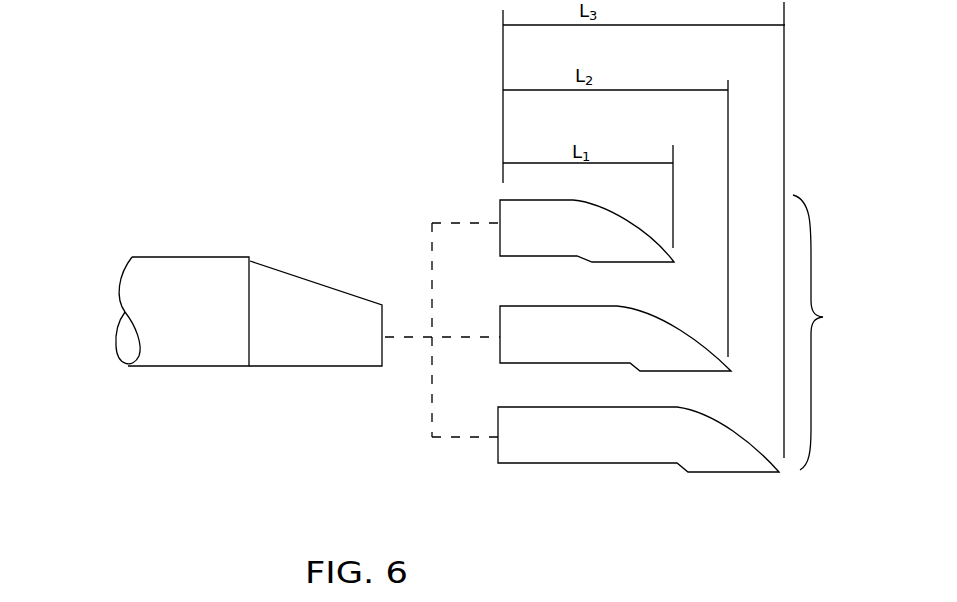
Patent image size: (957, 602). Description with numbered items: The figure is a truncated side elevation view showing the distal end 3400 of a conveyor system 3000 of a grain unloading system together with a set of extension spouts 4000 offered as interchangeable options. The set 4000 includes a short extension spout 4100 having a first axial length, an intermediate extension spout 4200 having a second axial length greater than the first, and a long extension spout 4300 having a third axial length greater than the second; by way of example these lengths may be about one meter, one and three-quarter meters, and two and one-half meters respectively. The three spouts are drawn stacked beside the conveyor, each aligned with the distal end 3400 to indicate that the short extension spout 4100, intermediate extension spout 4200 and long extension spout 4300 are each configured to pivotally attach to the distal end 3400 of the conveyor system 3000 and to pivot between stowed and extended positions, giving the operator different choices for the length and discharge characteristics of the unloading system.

The conveyor system 3000 is at (145, 255).
The distal end 3400 is at (347, 323).
The set of extension spouts 4000 is at (844, 332).
The short extension spout 4100 is at (583, 240).
The intermediate extension spout 4200 is at (595, 350).
The long extension spout 4300 is at (600, 449).